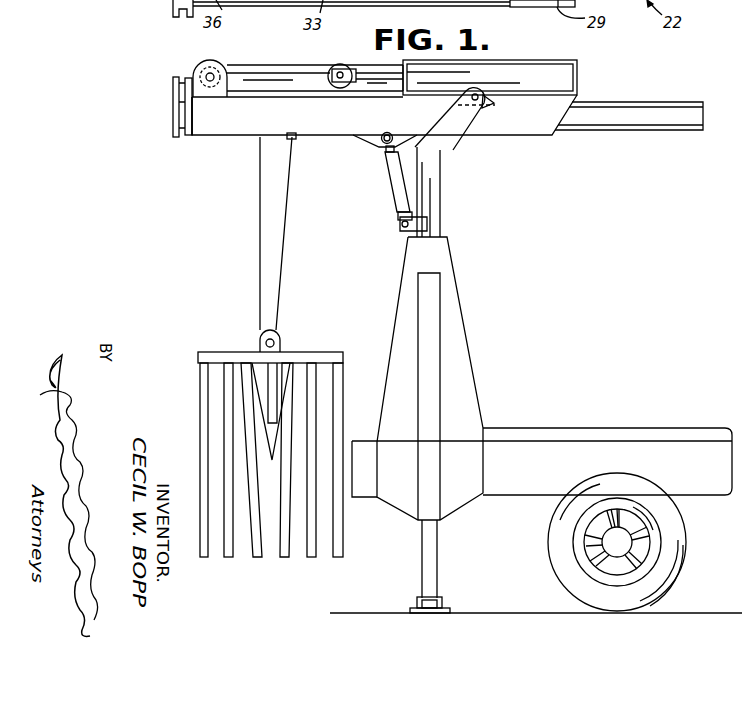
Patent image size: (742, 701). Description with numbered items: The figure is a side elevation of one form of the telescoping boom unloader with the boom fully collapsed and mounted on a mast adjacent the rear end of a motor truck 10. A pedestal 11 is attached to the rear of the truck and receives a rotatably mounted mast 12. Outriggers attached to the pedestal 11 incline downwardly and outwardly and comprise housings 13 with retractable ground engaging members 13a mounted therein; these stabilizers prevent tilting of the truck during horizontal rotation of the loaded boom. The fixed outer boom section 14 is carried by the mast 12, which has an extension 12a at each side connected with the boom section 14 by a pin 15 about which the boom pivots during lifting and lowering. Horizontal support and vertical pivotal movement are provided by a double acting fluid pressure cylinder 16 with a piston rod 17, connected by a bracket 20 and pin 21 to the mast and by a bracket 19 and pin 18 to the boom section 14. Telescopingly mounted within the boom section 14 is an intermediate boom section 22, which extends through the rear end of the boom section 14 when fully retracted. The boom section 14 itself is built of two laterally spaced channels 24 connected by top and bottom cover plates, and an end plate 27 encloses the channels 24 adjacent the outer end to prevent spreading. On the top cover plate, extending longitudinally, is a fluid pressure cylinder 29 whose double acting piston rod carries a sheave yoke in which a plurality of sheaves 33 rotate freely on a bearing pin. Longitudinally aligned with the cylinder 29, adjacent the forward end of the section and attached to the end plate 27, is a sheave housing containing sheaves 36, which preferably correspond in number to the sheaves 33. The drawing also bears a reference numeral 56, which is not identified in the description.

The motor truck 10 is at (585, 408).
The pedestal 11 is at (470, 352).
The mast 12 is at (443, 198).
The mast extension 12a is at (456, 150).
The outrigger housing 13 is at (435, 298).
The retractable ground engaging member 13a is at (430, 560).
The boom section 14 is at (242, 143).
The pin 15 is at (478, 104).
The fluid pressure actuated cylinder 16 is at (388, 183).
The piston rod 17 is at (386, 148).
The pin 18 is at (387, 132).
The bracket 19 is at (362, 141).
The bracket 20 is at (428, 225).
The pin 21 is at (404, 228).
The intermediate boom section 22 is at (634, 130).
The channel 24 is at (302, 124).
The end plate 27 is at (192, 100).
The fluid pressure cylinder 29 is at (565, 73).
The sheave 33 is at (338, 64).
The sheave 36 is at (210, 62).
The end flange 56 is at (173, 100).